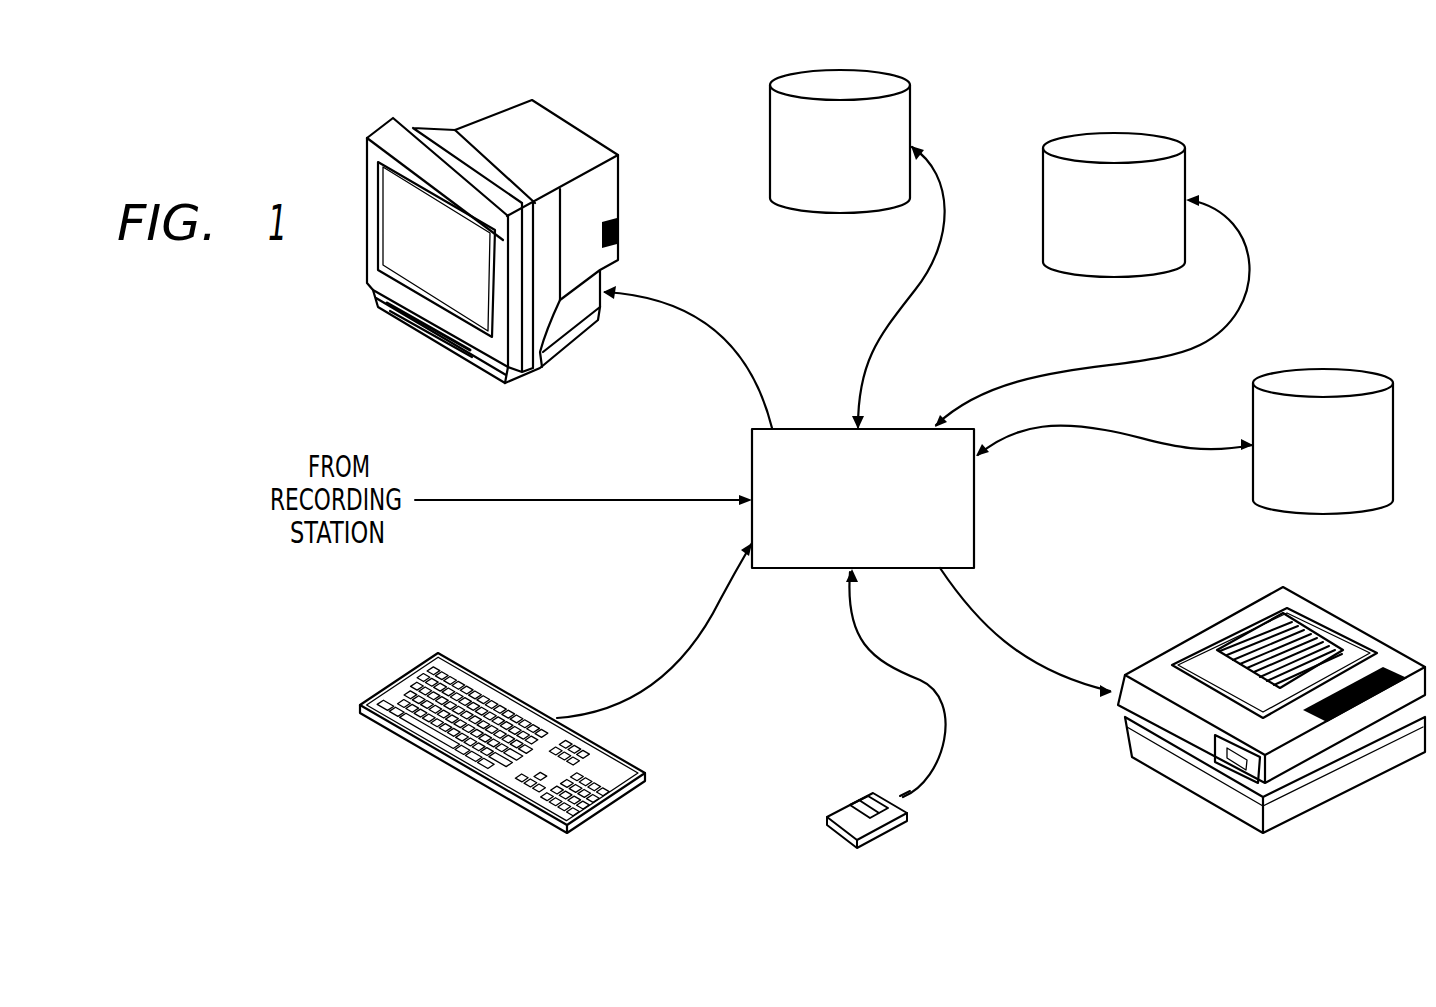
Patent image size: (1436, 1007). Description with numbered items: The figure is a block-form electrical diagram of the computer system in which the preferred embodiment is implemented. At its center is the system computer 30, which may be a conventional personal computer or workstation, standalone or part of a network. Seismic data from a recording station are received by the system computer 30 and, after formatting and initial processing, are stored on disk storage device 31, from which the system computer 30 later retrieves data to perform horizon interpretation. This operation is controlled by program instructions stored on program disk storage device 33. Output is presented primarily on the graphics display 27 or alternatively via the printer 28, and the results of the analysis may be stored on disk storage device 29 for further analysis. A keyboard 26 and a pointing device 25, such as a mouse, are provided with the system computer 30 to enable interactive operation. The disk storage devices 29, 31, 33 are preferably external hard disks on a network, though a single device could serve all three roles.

The pointing device 25 is at (840, 840).
The keyboard 26 is at (473, 782).
The graphics display 27 is at (483, 117).
The printer 28 is at (1323, 803).
The disk storage device 29 is at (1362, 368).
The system computer 30 is at (976, 530).
The disk storage device 31 is at (1140, 133).
The program disk storage device 33 is at (800, 70).